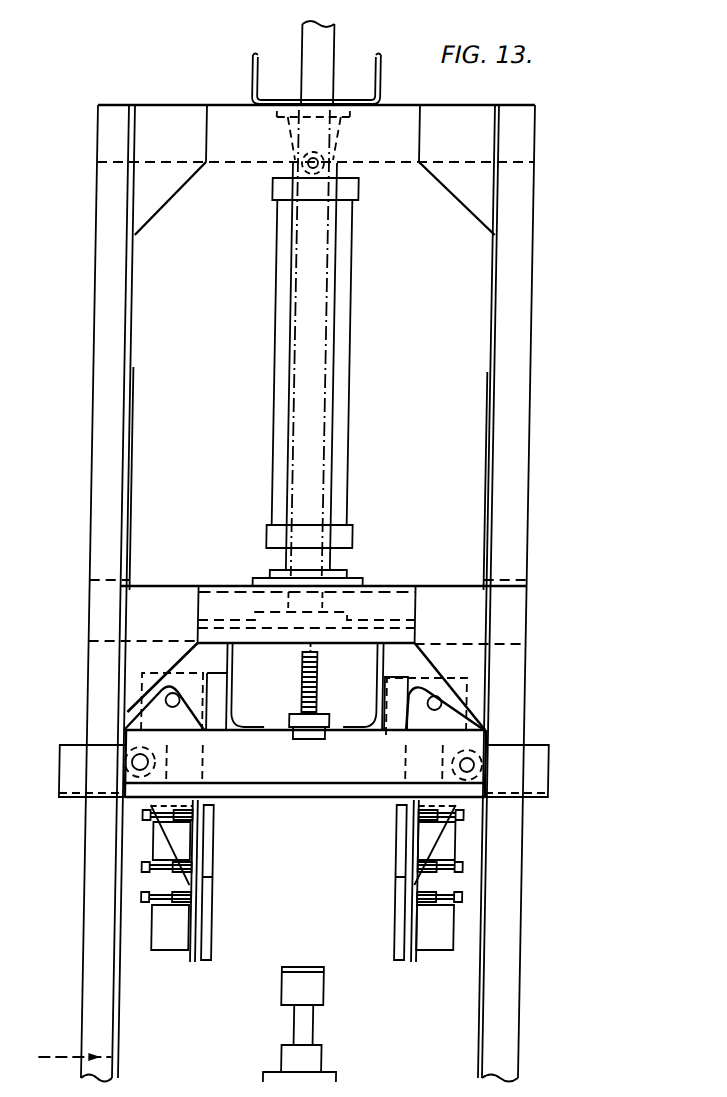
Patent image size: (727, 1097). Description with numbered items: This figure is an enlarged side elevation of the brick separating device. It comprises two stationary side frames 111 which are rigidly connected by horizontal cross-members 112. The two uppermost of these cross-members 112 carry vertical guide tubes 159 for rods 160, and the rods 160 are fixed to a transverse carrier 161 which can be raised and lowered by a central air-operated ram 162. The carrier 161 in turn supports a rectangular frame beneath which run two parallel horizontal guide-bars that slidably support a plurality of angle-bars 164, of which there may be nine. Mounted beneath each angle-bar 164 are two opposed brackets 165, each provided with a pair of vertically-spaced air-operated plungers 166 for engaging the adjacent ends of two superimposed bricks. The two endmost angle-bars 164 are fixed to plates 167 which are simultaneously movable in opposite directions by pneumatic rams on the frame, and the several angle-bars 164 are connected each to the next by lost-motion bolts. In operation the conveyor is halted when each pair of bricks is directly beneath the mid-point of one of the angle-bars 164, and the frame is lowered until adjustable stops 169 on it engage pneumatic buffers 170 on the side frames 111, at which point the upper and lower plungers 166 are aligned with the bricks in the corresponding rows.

The stationary side frame 111 is at (108, 478).
The horizontal cross-member 112 is at (252, 78).
The vertical guide tube 159 is at (338, 307).
The rod 160 is at (334, 368).
The transverse carrier 161 is at (368, 620).
The central air-operated ram 162 is at (279, 318).
The angle-bar 164 is at (272, 800).
The bracket 165 is at (206, 966).
The air-operated plunger 166 is at (224, 860).
The plate 167 is at (144, 755).
The adjustable stop 169 is at (310, 742).
The pneumatic buffer 170 is at (312, 985).